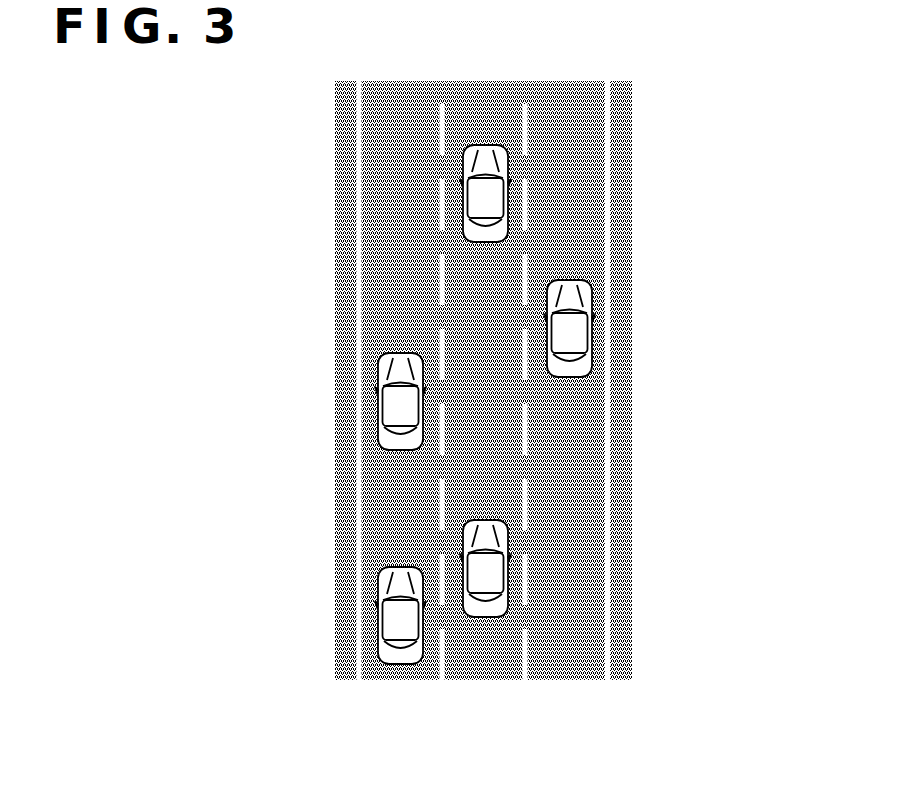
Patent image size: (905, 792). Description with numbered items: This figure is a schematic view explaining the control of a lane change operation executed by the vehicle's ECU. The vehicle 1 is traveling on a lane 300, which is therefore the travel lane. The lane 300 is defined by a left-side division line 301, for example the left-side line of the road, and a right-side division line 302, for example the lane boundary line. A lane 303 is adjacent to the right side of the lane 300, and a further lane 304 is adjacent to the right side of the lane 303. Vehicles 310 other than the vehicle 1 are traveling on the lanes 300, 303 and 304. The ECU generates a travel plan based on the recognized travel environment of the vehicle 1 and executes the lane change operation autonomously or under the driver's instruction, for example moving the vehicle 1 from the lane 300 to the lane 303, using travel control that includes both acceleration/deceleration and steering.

The vehicle 1 is at (386, 401).
The lane 300 is at (398, 95).
The left-side division line 301 is at (358, 108).
The right-side division line 302 is at (442, 118).
The lane 303 is at (502, 97).
The lane 304 is at (570, 97).
The vehicles 310 is at (507, 200).